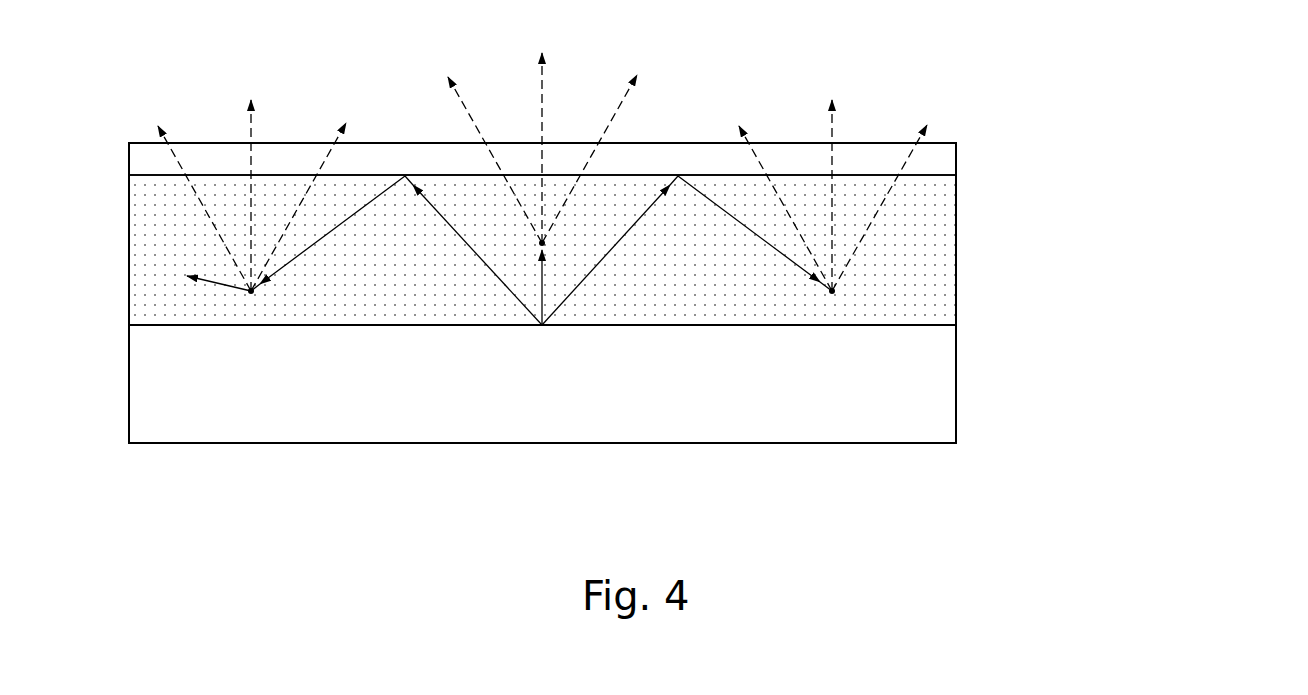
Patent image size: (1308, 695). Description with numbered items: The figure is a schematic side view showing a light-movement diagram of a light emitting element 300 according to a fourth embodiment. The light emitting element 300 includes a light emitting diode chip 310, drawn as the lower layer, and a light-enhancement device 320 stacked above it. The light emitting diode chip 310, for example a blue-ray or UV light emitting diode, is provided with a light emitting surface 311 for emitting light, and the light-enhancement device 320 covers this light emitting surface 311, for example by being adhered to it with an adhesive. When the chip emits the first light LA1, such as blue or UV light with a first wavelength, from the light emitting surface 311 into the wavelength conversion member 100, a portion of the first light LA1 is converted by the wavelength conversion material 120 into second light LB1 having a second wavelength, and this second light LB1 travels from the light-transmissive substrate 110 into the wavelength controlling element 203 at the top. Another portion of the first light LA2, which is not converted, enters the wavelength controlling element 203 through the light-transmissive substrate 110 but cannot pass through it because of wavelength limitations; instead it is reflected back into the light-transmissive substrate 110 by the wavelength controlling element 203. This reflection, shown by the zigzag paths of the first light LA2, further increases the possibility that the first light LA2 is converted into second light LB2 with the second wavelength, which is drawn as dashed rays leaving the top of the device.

The light emitting element 300 is at (1212, 186).
The light-enhancement device 320 is at (1142, 142).
The light emitting diode chip 310 is at (925, 380).
The light emitting surface 311 is at (177, 324).
The wavelength controlling element 203 is at (956, 157).
The wavelength conversion member 100 is at (1072, 218).
The light-transmissive substrate 110 is at (956, 213).
The wavelength conversion material 120 is at (940, 247).
The first light LA1 is at (542, 307).
The first light LA2 is at (293, 268).
The second light LB1 is at (542, 90).
The second light LB2 is at (250, 137).